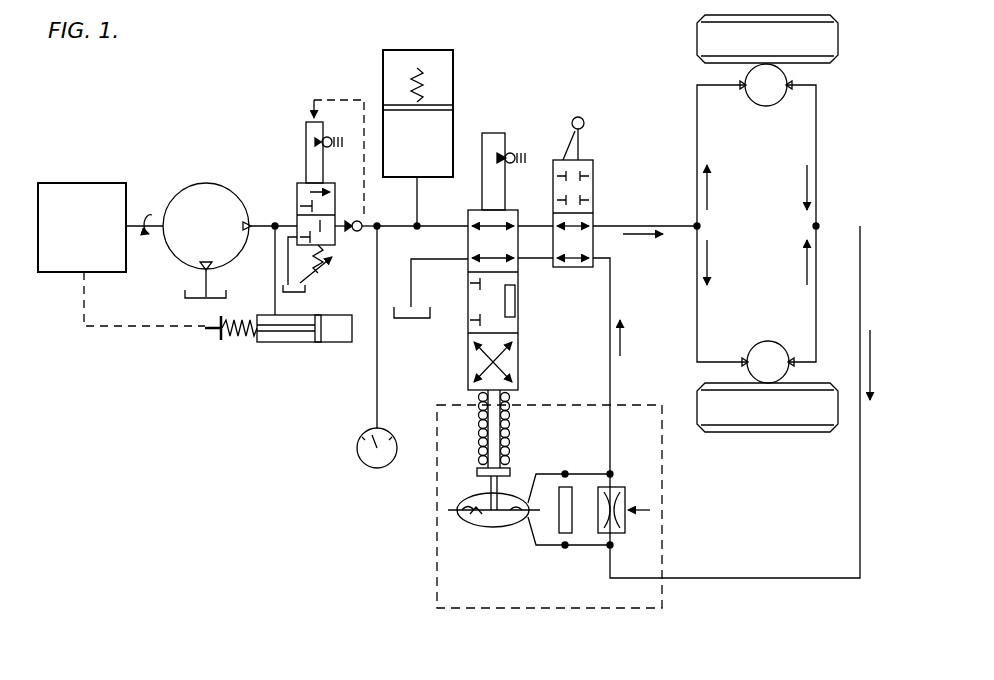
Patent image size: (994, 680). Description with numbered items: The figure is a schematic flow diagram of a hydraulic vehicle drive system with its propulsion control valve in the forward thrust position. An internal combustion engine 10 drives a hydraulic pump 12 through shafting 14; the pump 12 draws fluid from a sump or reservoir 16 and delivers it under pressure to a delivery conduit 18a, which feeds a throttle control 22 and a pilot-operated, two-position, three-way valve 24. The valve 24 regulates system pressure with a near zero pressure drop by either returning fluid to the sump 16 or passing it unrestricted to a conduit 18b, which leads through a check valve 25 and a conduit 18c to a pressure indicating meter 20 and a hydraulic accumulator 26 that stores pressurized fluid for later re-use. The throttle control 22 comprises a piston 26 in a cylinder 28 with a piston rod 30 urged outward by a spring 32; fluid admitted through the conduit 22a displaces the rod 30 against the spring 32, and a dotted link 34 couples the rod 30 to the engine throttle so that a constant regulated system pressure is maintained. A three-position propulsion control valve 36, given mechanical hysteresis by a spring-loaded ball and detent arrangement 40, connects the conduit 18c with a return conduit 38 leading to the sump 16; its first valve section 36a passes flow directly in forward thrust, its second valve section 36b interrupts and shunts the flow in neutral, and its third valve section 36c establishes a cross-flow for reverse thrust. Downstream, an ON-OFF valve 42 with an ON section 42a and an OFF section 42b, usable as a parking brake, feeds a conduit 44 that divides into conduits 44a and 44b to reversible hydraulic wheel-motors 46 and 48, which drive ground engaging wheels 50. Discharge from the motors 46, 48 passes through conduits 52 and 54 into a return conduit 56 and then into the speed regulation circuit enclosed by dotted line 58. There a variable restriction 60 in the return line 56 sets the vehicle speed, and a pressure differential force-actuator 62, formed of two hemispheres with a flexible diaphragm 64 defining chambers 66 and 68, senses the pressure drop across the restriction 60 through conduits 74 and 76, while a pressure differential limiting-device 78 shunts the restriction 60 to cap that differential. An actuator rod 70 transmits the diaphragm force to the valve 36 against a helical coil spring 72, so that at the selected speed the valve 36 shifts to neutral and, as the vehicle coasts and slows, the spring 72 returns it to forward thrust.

The internal combustion engine 10 is at (62, 273).
The hydraulic pump 12 is at (222, 184).
The shafting 14 is at (137, 226).
The sump or reservoir 16 is at (183, 297).
The fluid supply or delivery conduit 18a is at (262, 215).
The conduit 18b is at (360, 220).
The delivery conduit 18c is at (378, 229).
The fluid pressure indicating meter 20 is at (357, 448).
The throttle control 22 is at (300, 356).
The conduit 22a is at (275, 292).
The pilot-operated two-position three-way valve 24 is at (296, 186).
The check valve 25 is at (331, 264).
The hydraulic accumulator 26 is at (455, 82).
The cylinder 28 is at (320, 343).
The piston rod 30 is at (262, 332).
The spring 32 is at (226, 338).
The link 34 is at (103, 333).
The propulsion control valve 36 is at (522, 332).
The first valve section 36a is at (493, 242).
The second valve section 36b is at (492, 302).
The third valve section 36c is at (466, 371).
The return or discharge conduit 38 is at (436, 242).
The detent arrangement 40 is at (523, 151).
The ON-OFF valve 42 is at (603, 152).
The ON section 42a is at (597, 239).
The OFF section 42b is at (575, 190).
The conduit 44 is at (628, 224).
The conduit 44a is at (697, 143).
The conduit 44b is at (697, 322).
The reversible hydraulic wheel-motor 46 is at (766, 85).
The reversible hydraulic wheel-motor 48 is at (768, 362).
The ground engaging wheels 50 is at (767, 223).
The conduit 52 is at (816, 160).
The conduit 54 is at (816, 291).
The discharge or return conduit 56 is at (858, 528).
The speed regulation circuit 58 is at (437, 600).
The variable restriction 60 is at (622, 490).
The pressure differential force-actuator 62 is at (484, 536).
The flexible diaphragm 64 is at (480, 522).
The chamber 66 is at (500, 522).
The chamber 68 is at (477, 503).
The actuator rod 70 is at (497, 414).
The helical coil spring 72 is at (507, 420).
The conduit 74 is at (580, 550).
The conduit 76 is at (548, 472).
The pressure differential limiting-device 78 is at (571, 495).